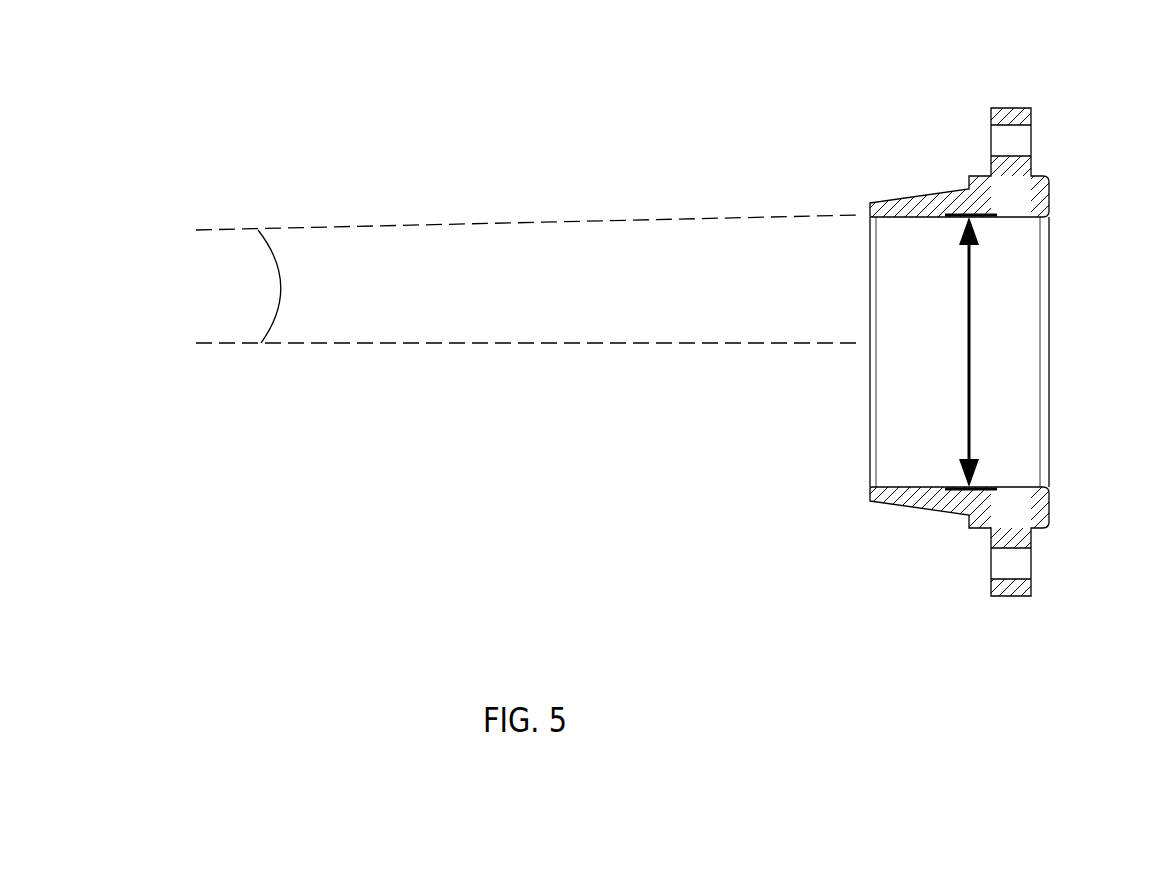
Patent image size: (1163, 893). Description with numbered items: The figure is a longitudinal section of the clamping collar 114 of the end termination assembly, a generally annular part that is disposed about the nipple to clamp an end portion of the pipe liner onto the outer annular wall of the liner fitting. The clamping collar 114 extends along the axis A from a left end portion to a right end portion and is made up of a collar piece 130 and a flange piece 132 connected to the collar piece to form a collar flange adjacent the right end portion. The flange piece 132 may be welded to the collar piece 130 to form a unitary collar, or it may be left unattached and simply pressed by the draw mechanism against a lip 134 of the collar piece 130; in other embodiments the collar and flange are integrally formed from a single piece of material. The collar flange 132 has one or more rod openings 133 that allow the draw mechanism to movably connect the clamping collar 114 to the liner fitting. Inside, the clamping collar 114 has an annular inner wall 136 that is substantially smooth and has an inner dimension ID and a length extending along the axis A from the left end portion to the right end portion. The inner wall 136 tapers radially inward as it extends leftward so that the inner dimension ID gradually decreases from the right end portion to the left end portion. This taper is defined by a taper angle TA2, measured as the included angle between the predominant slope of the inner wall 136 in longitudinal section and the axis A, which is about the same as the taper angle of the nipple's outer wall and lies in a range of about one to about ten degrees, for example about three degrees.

The clamping collar 114 is at (850, 566).
The collar piece 130 is at (918, 197).
The flange piece 132 is at (1031, 115).
The rod openings 133 is at (1018, 141).
The lip 134 is at (1048, 177).
The annular inner wall 136 is at (914, 489).
The inner dimension ID is at (971, 319).
The taper angle TA2 is at (281, 287).
The axis A is at (212, 343).